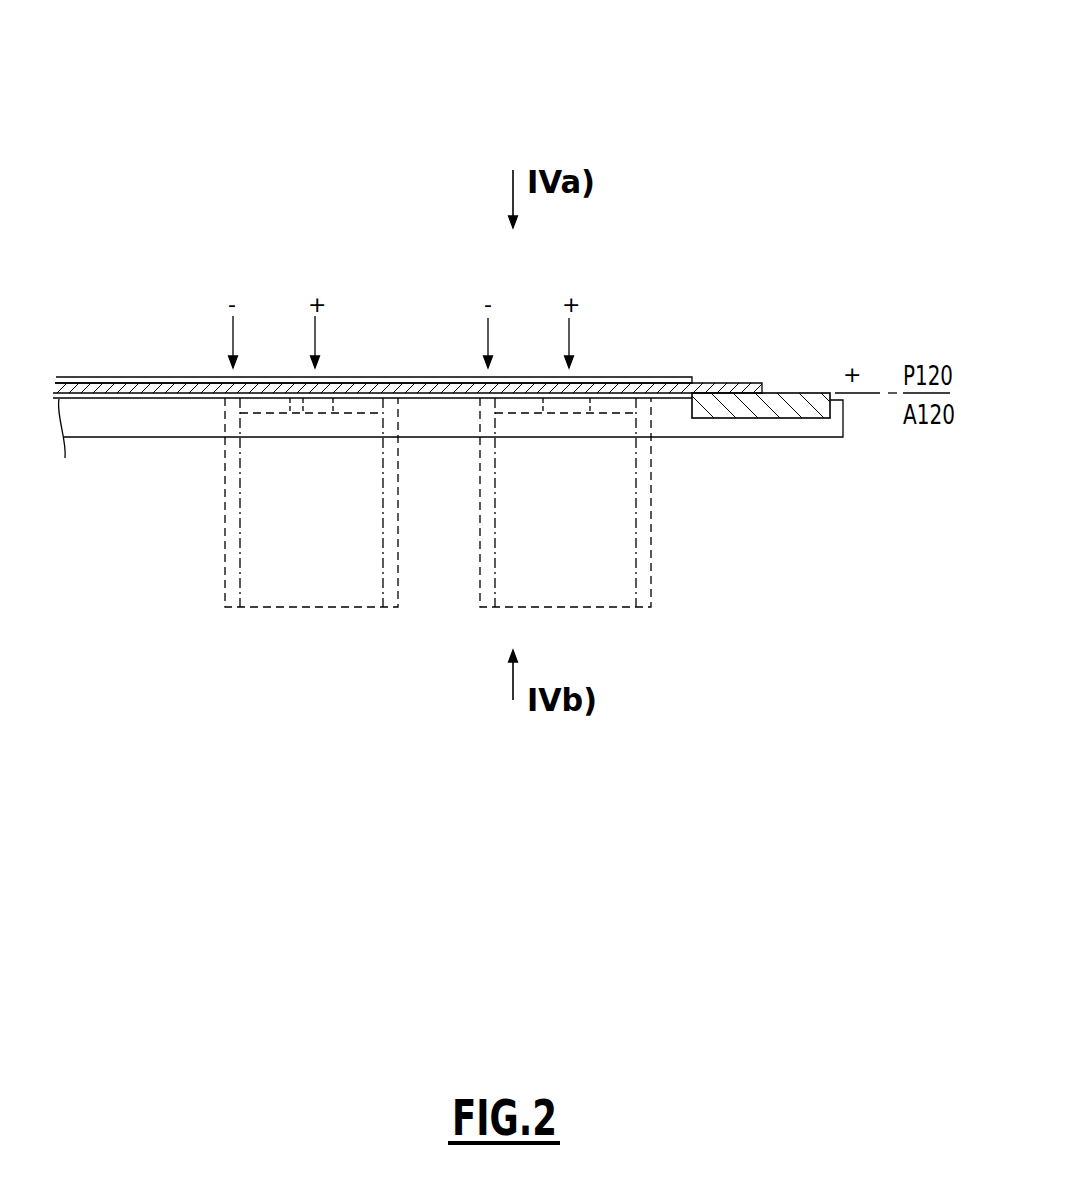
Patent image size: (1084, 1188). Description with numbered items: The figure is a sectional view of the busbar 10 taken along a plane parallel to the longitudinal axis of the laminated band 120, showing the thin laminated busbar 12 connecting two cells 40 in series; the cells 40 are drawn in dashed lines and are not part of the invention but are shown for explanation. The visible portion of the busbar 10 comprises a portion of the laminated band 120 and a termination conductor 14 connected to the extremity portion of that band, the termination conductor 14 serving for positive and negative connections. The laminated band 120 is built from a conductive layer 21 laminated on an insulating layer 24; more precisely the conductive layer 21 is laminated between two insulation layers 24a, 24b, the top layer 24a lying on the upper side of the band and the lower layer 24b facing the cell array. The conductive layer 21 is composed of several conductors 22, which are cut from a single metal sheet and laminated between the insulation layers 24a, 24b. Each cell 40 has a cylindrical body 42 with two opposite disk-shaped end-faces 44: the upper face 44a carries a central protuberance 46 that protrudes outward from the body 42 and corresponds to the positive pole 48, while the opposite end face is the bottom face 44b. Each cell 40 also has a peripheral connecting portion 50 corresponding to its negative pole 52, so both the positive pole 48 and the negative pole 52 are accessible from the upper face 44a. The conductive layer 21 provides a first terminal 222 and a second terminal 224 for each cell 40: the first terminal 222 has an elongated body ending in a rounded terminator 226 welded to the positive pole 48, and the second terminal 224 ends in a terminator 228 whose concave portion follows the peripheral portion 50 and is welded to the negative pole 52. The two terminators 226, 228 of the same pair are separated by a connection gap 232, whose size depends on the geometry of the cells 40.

The busbar 10 is at (234, 72).
The thin laminated busbar 12 is at (370, 140).
The laminated band 120 is at (305, 165).
The insulating layer 24 is at (175, 215).
The top insulation layer 24a is at (80, 377).
The lower insulation layer 24b is at (110, 377).
The conductive layer 21 is at (400, 215).
The conductors 22 is at (150, 377).
The termination conductor 14 is at (778, 400).
The cell 40 is at (267, 590).
The body 42 is at (617, 570).
The end-faces 44 is at (620, 402).
The upper face 44a is at (515, 392).
The bottom face 44b is at (599, 622).
The central protuberance 46 is at (556, 372).
The positive pole 48 is at (341, 376).
The peripheral connecting portion 50 is at (645, 515).
The negative pole 52 is at (227, 404).
The first terminal 222 is at (305, 393).
The second terminal 224 is at (218, 370).
The terminator 226 is at (277, 394).
The terminator 228 is at (263, 400).
The connection gap 232 is at (270, 360).